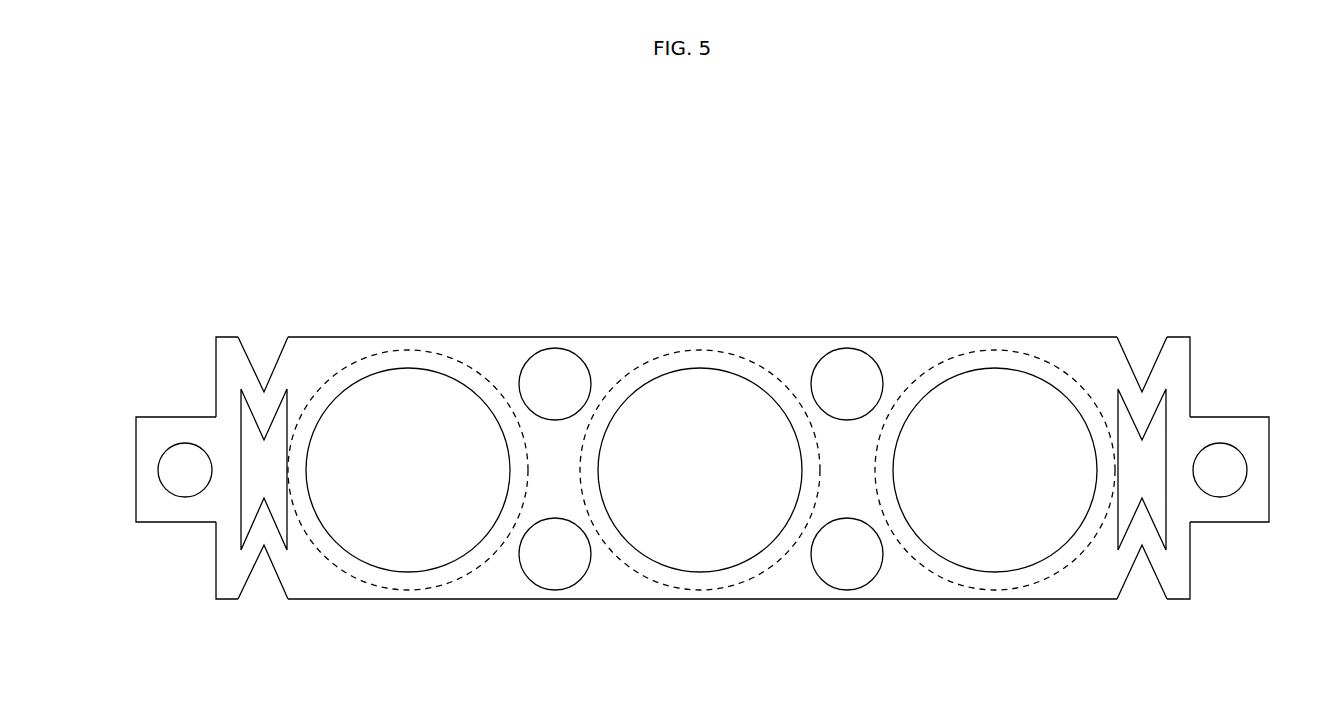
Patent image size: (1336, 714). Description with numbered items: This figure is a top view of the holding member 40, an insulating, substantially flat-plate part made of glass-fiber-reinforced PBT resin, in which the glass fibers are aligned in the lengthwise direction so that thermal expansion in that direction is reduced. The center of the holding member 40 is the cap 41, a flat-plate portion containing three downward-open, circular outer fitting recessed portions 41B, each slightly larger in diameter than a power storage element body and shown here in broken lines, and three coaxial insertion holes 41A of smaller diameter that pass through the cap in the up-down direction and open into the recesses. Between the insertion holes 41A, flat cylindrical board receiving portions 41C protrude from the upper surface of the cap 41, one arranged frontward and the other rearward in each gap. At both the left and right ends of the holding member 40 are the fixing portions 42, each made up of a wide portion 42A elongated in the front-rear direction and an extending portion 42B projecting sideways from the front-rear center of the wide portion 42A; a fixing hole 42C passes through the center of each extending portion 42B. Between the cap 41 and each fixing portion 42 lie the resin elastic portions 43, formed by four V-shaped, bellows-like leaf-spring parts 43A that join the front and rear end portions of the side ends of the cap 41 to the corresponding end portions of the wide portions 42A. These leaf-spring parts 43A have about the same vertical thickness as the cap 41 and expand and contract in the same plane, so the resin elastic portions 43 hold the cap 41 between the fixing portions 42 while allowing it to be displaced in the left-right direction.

The holding member 40 is at (713, 188).
The cap 41 is at (633, 288).
The insertion hole 41A is at (703, 373).
The outer fitting recessed portion 41B is at (760, 377).
The board receiving portion 41C is at (560, 367).
The fixing portion 42 is at (163, 338).
The wide portion 42A is at (227, 348).
The extending portion 42B is at (155, 420).
The fixing hole 42C is at (160, 472).
The resin elastic portion 43 is at (272, 310).
The leaf-spring part 43A is at (262, 412).